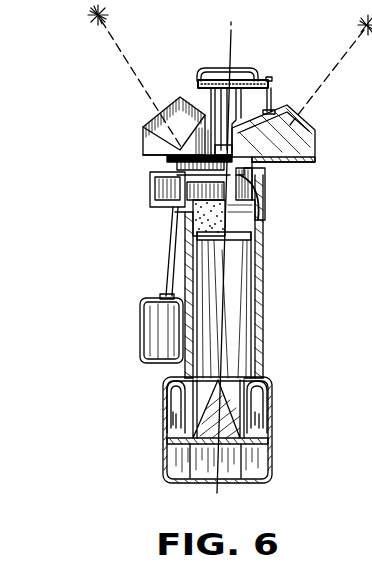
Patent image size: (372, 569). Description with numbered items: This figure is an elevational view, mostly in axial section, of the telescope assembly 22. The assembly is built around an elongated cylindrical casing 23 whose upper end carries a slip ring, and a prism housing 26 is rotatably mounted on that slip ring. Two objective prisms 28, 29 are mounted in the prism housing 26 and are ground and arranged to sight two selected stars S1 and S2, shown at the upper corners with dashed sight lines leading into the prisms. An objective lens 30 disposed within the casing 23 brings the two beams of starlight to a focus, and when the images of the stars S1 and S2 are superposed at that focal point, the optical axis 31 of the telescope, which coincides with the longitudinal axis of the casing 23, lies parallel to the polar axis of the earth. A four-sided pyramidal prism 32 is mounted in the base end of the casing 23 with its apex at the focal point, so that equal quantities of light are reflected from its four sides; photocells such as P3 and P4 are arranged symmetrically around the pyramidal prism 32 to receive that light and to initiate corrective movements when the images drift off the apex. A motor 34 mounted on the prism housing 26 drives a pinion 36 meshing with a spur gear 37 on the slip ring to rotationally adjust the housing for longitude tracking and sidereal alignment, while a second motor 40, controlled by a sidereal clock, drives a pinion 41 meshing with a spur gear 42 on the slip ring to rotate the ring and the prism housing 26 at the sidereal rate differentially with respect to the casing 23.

The telescope assembly 22 is at (292, 269).
The cylindrical casing 23 is at (265, 298).
The prism housing 26 is at (145, 148).
The objective prism 28 is at (292, 103).
The objective prism 29 is at (186, 100).
The objective lens 30 is at (264, 247).
The optical axis 31 is at (232, 38).
The pyramidal prism 32 is at (245, 445).
The motor 34 is at (204, 98).
The pinion 36 is at (266, 183).
The spur gear 37 is at (180, 167).
The motor 40 is at (150, 320).
The pinion 41 is at (168, 196).
The spur gear 42 is at (262, 207).
The star S1 is at (362, 24).
The star S2 is at (92, 26).
The photocell P3 is at (176, 391).
The photocell P4 is at (270, 398).